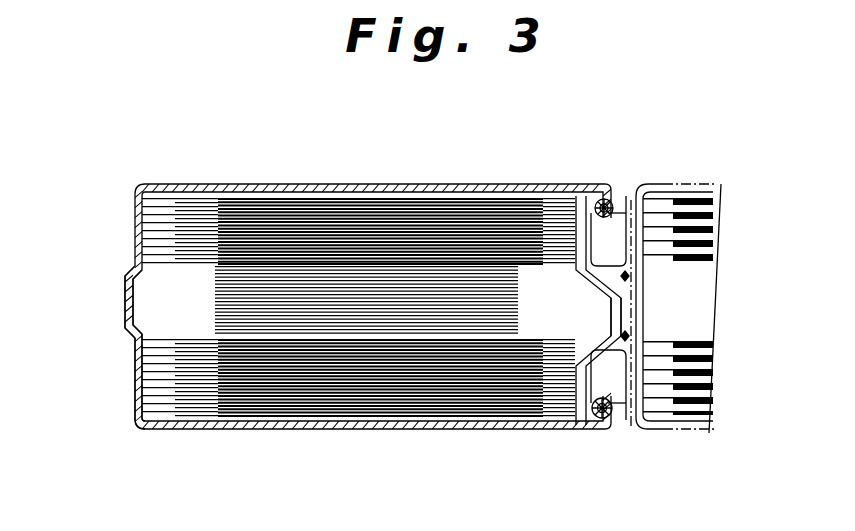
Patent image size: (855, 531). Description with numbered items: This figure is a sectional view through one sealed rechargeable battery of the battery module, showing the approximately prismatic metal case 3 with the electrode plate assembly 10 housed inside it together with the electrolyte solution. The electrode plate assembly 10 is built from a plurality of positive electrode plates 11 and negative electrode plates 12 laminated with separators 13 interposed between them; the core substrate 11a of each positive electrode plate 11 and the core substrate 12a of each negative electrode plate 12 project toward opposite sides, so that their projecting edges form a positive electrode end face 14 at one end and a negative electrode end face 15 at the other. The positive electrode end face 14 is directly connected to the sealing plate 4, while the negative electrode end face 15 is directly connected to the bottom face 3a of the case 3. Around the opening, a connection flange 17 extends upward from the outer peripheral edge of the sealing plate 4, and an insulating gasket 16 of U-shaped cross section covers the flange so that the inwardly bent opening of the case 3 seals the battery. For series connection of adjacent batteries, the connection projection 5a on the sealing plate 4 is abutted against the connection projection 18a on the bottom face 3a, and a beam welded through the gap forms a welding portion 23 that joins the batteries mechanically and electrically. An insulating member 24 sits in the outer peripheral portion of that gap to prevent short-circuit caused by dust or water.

The case 3 is at (265, 421).
The bottom face of the case 3a is at (128, 370).
The sealing plate 4 is at (584, 244).
The connection projection 5a is at (627, 300).
The electrode plate assembly 10 is at (323, 287).
The positive electrode plate 11 is at (428, 196).
The core substrate of the positive electrode plate 11a is at (557, 398).
The negative electrode plate 12 is at (246, 196).
The core substrate of the negative electrode plate 12a is at (142, 418).
The separator 13 is at (292, 196).
The positive electrode end face 14 is at (566, 202).
The negative electrode end face 15 is at (127, 212).
The insulating gasket 16 is at (590, 194).
The connection flange 17 is at (588, 416).
The connection projection 18a is at (116, 298).
The welding portion 23 is at (662, 240).
The insulating member 24 is at (615, 188).